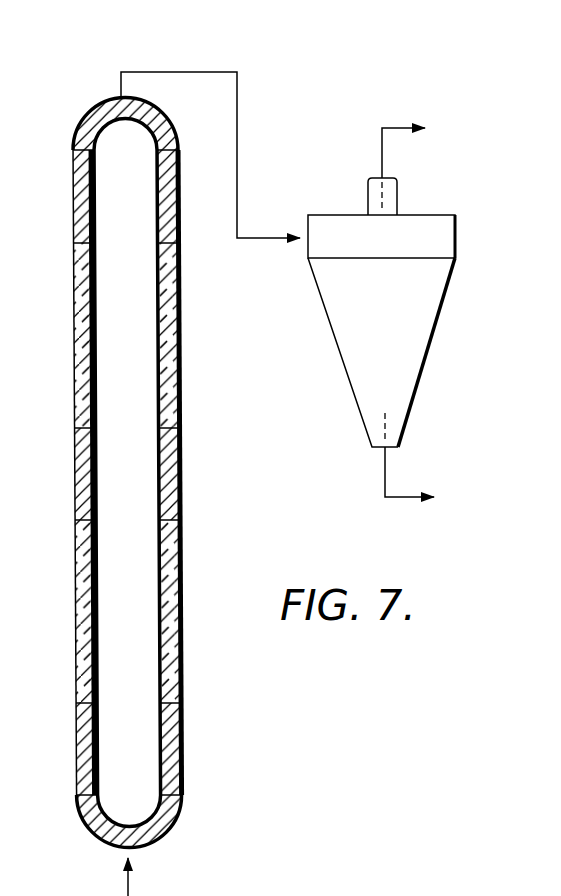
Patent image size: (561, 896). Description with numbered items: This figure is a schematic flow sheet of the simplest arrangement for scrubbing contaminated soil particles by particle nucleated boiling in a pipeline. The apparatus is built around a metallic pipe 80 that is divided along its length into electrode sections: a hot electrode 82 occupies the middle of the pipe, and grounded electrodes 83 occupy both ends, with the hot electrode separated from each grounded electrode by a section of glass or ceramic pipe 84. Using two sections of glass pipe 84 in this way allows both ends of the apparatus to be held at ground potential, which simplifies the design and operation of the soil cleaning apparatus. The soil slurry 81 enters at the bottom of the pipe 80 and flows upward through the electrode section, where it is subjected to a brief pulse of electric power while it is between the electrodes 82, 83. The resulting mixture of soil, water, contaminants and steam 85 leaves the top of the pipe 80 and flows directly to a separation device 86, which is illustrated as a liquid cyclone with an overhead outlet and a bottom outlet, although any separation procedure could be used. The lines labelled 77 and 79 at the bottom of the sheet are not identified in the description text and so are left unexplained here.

The metallic pipe 80 is at (208, 386).
The soil slurry 81 is at (91, 895).
The hot electrode 82 is at (73, 485).
The grounded electrodes 83 is at (73, 232).
The glass or ceramic pipe sections 84 is at (73, 365).
The mixture of soil, water, contaminants and steam 85 is at (157, 71).
The separation device 86 is at (337, 213).
The feed line 77 is at (241, 885).
The feed line 79 is at (374, 891).